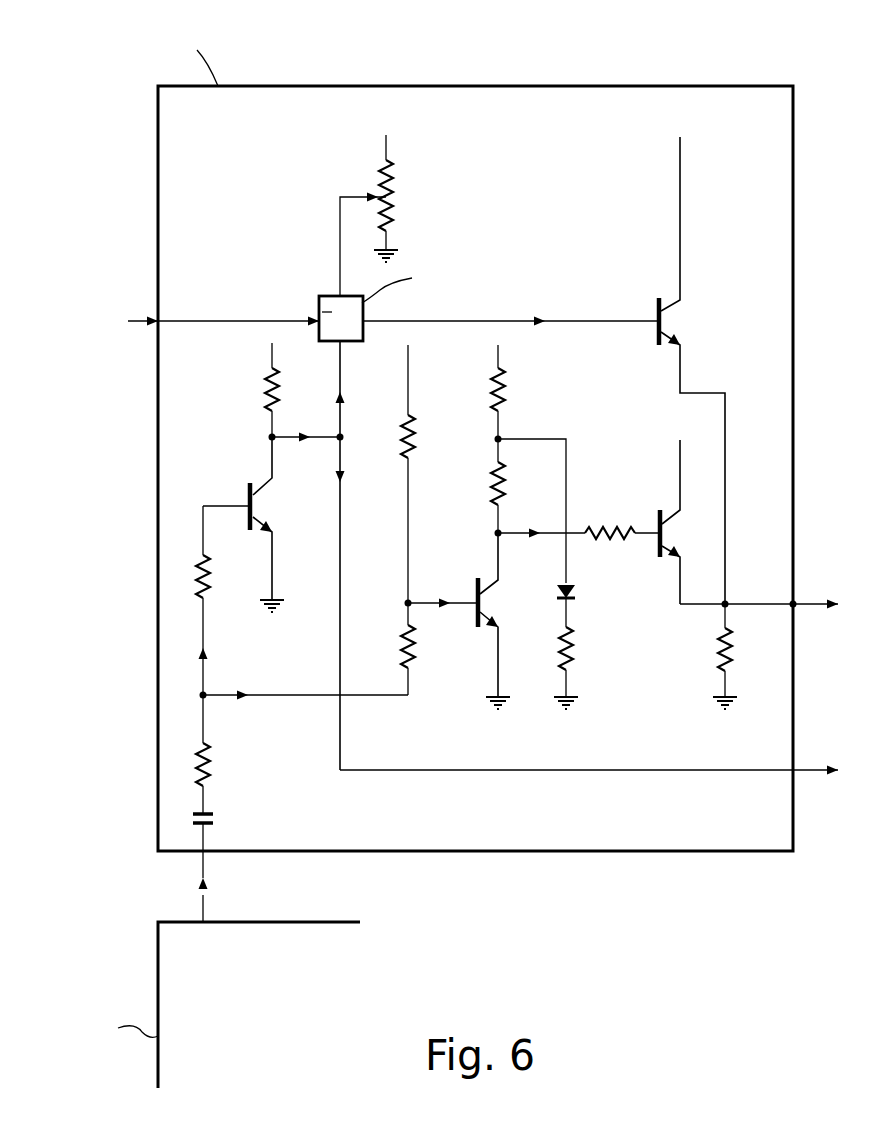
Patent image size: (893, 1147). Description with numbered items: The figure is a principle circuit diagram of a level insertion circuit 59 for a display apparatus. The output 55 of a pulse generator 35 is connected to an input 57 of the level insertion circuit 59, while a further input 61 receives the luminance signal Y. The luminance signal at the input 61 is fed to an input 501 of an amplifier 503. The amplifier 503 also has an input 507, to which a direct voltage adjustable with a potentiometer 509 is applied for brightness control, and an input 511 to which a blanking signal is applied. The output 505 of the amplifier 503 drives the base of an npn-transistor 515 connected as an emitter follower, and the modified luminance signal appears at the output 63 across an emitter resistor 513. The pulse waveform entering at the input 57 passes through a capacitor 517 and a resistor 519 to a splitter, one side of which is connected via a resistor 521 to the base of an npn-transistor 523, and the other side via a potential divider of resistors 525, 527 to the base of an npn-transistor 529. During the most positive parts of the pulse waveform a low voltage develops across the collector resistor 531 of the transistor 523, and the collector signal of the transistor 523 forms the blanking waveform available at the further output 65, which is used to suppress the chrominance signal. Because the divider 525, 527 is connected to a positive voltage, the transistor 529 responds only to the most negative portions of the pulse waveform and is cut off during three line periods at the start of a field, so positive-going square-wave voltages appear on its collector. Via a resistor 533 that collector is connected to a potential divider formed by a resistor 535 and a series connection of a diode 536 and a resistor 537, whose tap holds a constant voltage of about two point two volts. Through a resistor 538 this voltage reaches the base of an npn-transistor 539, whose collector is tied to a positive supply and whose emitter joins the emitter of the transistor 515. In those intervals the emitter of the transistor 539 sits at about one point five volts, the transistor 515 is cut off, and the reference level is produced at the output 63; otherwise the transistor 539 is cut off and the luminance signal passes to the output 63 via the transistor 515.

The pulse generator 35 is at (158, 966).
The output of the pulse generator 55 is at (203, 922).
The input of the level insertion circuit 57 is at (203, 851).
The level insertion circuit 59 is at (158, 146).
The input of the level insertion circuit 61 is at (156, 320).
The output of the level insertion circuit 63 is at (795, 603).
The further output of the level insertion circuit 65 is at (795, 769).
The input of the amplifier 501 is at (319, 328).
The amplifier 503 is at (319, 312).
The output of the amplifier 505 is at (368, 318).
The input of the amplifier 507 is at (337, 296).
The potentiometer 509 is at (393, 182).
The input of the amplifier 511 is at (345, 343).
The emitter resistor 513 is at (722, 650).
The npn-transistor 515 is at (664, 320).
The capacitor 517 is at (214, 818).
The resistor 519 is at (210, 766).
The resistor 521 is at (208, 570).
The npn-transistor 523 is at (260, 503).
The resistor 525 is at (414, 653).
The resistor 527 is at (414, 438).
The npn-transistor 529 is at (486, 598).
The collector resistor 531 is at (300, 392).
The resistor 533 is at (492, 484).
The resistor 535 is at (492, 388).
The diode 536 is at (578, 590).
The resistor 537 is at (572, 660).
The resistor 538 is at (612, 527).
The npn-transistor 539 is at (670, 530).